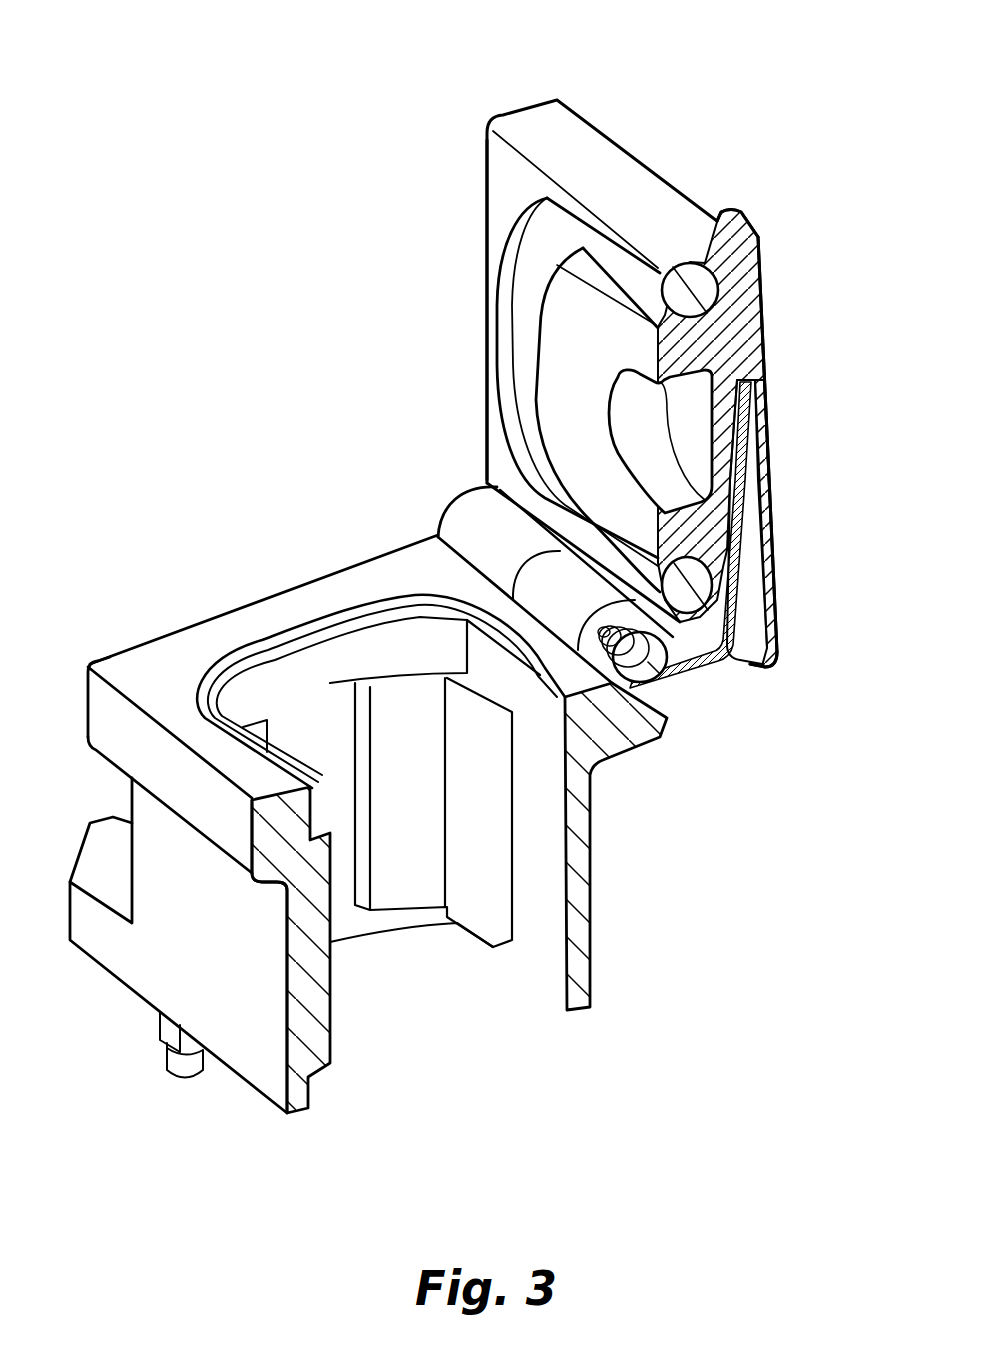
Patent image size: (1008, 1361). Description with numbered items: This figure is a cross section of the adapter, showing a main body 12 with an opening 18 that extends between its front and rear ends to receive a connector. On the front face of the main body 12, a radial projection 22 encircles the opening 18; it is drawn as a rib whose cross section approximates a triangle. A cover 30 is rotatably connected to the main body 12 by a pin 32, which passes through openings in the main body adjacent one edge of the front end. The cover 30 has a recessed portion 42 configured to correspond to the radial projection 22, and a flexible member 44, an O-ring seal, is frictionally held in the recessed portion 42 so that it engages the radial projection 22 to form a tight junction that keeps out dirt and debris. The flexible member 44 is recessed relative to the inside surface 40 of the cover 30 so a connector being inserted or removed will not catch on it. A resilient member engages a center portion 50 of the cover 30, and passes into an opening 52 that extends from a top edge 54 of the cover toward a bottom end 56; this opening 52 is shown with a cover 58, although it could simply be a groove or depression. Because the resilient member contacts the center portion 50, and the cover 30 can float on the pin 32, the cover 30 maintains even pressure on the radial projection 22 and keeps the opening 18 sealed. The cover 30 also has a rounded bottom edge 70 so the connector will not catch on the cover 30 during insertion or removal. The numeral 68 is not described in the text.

The main body 12 is at (593, 907).
The opening 18 is at (550, 963).
The radial projection 22 is at (240, 643).
The cover 30 is at (662, 177).
The pin 32 is at (655, 690).
The inside surface 40 is at (498, 182).
The recessed portion 42 is at (522, 315).
The flexible member 44 is at (700, 298).
The center portion 50 is at (730, 413).
The opening 52 is at (750, 643).
The top edge 54 is at (768, 670).
The bottom end 56 is at (720, 213).
The cover 58 is at (772, 567).
The flexible strip 68 is at (707, 673).
The rounded bottom edge 70 is at (518, 147).